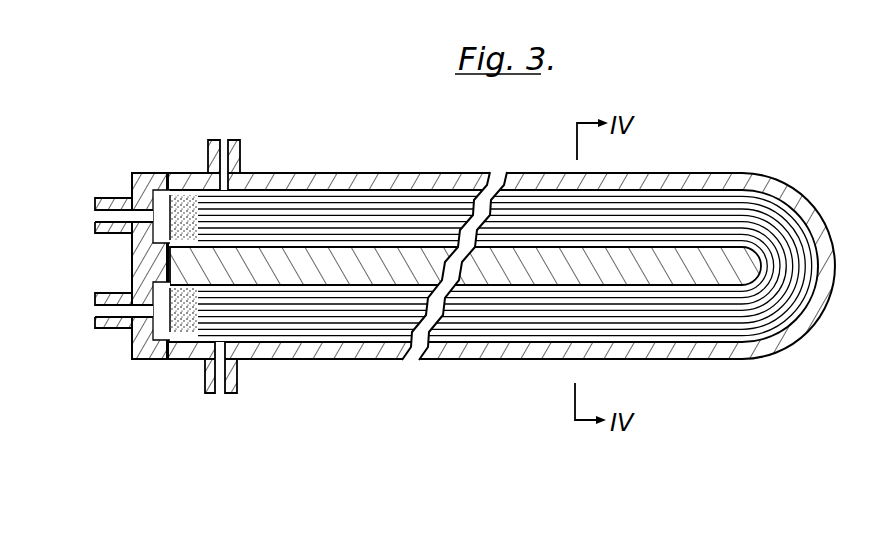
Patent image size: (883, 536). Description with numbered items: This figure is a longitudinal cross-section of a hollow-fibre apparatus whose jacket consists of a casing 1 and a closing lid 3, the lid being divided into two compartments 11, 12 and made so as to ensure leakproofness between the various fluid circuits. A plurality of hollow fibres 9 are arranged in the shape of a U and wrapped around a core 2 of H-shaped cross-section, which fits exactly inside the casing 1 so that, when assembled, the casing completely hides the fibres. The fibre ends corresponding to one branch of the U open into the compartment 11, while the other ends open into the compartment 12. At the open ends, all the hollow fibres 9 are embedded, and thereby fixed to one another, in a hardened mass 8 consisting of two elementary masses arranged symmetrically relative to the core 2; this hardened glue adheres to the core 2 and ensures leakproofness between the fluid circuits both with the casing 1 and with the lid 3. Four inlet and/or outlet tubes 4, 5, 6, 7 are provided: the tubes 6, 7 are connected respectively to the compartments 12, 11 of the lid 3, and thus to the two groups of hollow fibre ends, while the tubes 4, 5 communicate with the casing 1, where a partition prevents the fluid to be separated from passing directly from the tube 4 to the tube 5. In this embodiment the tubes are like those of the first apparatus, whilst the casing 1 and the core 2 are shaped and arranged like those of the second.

The casing 1 is at (780, 188).
The core 2 is at (748, 263).
The closing lid 3 is at (143, 353).
The tube 4 is at (223, 387).
The tube 5 is at (225, 146).
The tube 6 is at (95, 310).
The tube 7 is at (95, 217).
The hardened mass 8 is at (185, 203).
The hollow fibres 9 is at (372, 215).
The compartment 11 is at (162, 213).
The compartment 12 is at (162, 327).